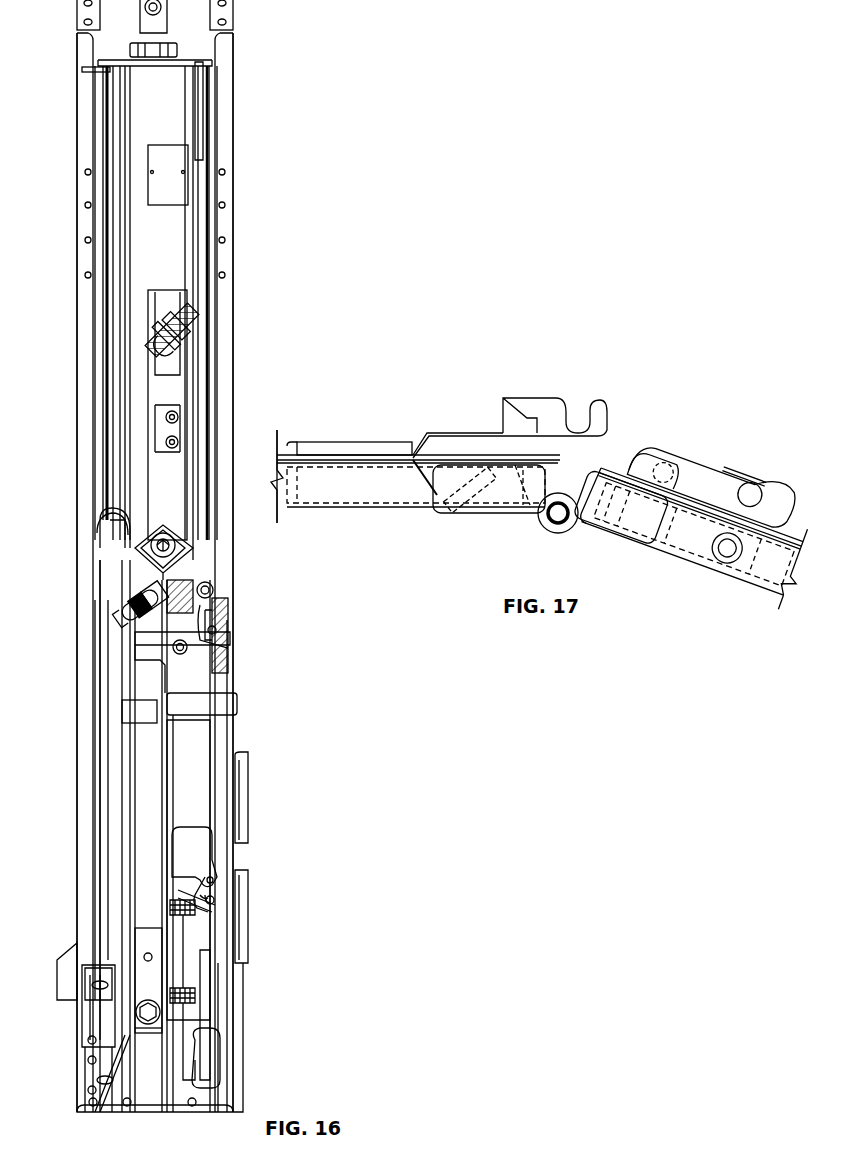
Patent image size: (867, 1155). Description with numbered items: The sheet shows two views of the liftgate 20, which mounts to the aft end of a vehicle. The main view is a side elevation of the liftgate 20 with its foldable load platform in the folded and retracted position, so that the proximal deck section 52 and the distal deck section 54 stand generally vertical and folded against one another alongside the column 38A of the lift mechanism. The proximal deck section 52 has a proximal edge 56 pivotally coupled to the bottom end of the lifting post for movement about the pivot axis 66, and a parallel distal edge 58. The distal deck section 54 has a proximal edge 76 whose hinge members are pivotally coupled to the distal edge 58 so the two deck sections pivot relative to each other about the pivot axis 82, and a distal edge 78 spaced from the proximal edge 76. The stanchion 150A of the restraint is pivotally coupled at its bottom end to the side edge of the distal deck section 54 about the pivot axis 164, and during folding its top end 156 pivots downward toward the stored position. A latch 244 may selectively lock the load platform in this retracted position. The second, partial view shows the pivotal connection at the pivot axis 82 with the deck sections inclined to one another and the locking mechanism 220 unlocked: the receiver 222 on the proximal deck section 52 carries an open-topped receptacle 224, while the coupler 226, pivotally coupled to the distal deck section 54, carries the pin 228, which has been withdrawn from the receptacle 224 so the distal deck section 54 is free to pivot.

In FIG. 16, the liftgate 20 is at (310, 213).
In FIG. 16, the column 38A is at (233, 117).
In FIG. 16, the proximal deck section 52 is at (148, 837).
In FIG. 16, the distal deck section 54 is at (178, 890).
In FIG. 16, the proximal edge 56 is at (92, 1055).
In FIG. 16, the distal edge 58 is at (97, 533).
In FIG. 16, the pivot axis 66 is at (150, 1025).
In FIG. 16, the proximal edge 76 is at (213, 553).
In FIG. 16, the distal edge 78 is at (200, 1043).
In FIG. 16, the pivot axis 82 is at (178, 533).
In FIG. 16, the stanchion 150A is at (193, 748).
In FIG. 16, the top end 156 is at (197, 863).
In FIG. 16, the pivot axis 164 is at (190, 655).
In FIG. 16, the latch 244 is at (228, 605).
In FIG. 17, the locking mechanism 220 is at (699, 388).
In FIG. 17, the receiver 222 is at (488, 433).
In FIG. 17, the receptacle 224 is at (578, 415).
In FIG. 17, the coupler 226 is at (727, 457).
In FIG. 17, the pin 228 is at (750, 495).